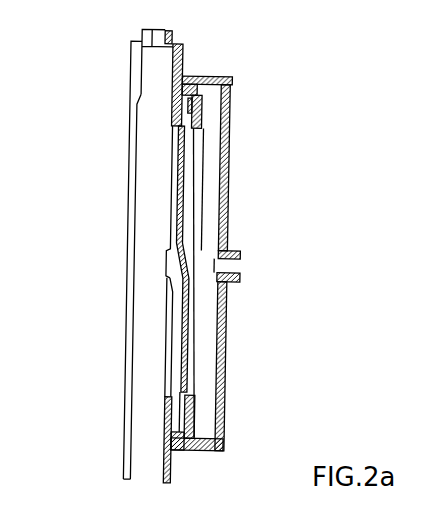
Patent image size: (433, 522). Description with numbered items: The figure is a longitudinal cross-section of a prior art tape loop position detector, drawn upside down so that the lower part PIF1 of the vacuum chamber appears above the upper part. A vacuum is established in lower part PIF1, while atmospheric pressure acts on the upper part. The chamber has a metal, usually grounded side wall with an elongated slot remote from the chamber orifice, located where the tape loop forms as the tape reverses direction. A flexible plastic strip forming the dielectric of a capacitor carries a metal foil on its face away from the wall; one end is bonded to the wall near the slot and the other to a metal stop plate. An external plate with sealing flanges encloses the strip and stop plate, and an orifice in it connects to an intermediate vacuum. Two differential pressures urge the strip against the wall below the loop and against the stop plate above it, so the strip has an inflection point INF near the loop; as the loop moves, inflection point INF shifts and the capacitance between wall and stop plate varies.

The lower part of chamber PIF1 is at (151, 92).
The inflection point INF is at (195, 267).